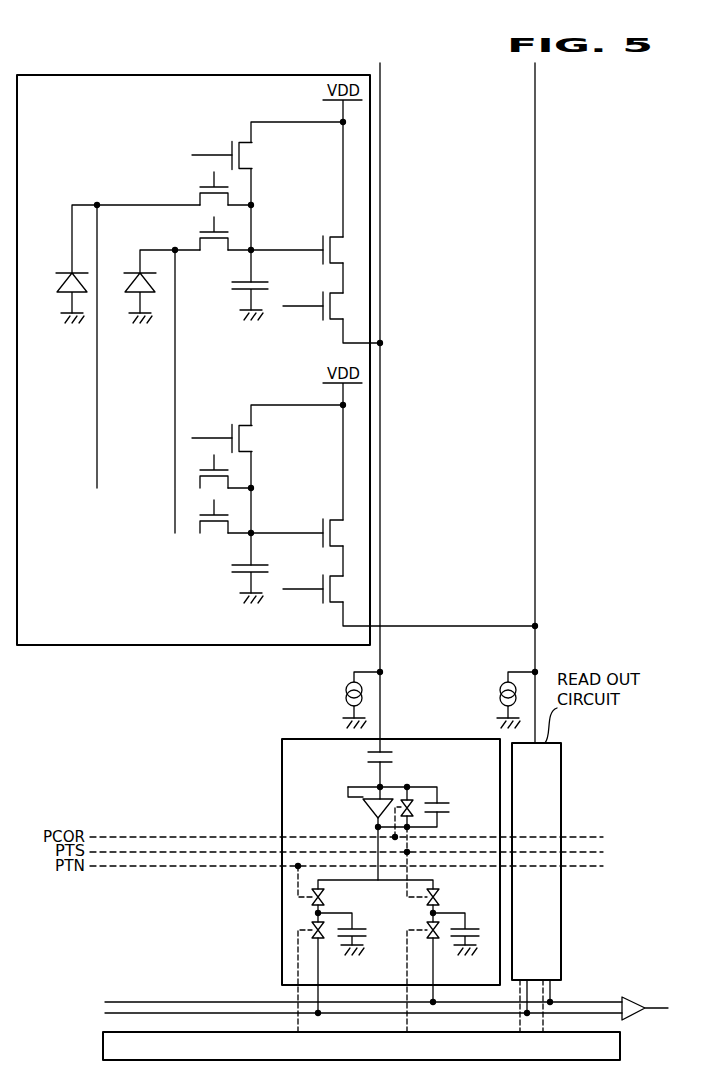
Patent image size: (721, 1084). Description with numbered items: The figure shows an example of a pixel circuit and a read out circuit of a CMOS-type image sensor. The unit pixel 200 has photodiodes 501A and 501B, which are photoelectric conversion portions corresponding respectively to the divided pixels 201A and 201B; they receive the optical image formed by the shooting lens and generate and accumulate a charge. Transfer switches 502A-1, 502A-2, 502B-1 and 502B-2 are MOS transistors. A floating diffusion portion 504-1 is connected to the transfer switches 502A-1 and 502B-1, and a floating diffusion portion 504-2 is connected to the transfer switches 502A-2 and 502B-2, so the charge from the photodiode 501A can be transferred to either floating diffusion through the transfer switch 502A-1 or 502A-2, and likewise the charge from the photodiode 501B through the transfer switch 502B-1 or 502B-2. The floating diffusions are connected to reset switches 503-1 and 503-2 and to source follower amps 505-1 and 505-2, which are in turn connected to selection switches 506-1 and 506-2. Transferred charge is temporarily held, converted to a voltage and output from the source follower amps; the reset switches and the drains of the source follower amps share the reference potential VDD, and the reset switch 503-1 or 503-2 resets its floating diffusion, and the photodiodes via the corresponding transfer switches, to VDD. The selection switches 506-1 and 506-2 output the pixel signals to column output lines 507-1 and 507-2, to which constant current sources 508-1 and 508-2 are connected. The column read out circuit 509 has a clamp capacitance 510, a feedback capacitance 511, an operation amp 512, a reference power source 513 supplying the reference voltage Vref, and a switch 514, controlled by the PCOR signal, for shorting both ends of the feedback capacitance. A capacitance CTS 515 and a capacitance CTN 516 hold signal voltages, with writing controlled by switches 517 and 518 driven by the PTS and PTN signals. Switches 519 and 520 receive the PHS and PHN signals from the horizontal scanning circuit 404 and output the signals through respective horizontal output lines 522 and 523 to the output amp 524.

The unit pixel 200 is at (80, 75).
The photodiode 501A is at (56, 319).
The photodiode 501B is at (129, 319).
The divided pixel 201A is at (66, 295).
The divided pixel 201B is at (134, 295).
The transfer switch 502A-1 is at (200, 186).
The transfer switch 502B-1 is at (200, 232).
The transfer switch 502A-2 is at (198, 470).
The transfer switch 502B-2 is at (198, 516).
The reset switch 503-1 is at (232, 146).
The reset switch 503-2 is at (233, 432).
The floating diffusion portion 504-1 is at (240, 282).
The floating diffusion portion 504-2 is at (240, 572).
The source follower amp 505-1 is at (323, 240).
The source follower amp 505-2 is at (323, 525).
The selection switch 506-1 is at (323, 316).
The selection switch 506-2 is at (323, 603).
The column output line 507-1 is at (380, 243).
The column output line 507-2 is at (535, 243).
The constant current source 508-1 is at (346, 690).
The constant current source 508-2 is at (500, 690).
The column read out circuit 509 is at (282, 757).
The clamp capacitance 510 is at (396, 757).
The feedback capacitance 511 is at (449, 804).
The operation amp 512 is at (375, 803).
The reference power source 513 is at (355, 799).
The switch 514 is at (440, 822).
The capacitance CTS 515 is at (468, 928).
The capacitance CTN 516 is at (360, 928).
The switch 517 is at (440, 897).
The switch 518 is at (326, 897).
The switch 519 is at (435, 940).
The switch 520 is at (322, 940).
The horizontal output line 522 is at (105, 1002).
The horizontal output line 523 is at (105, 1013).
The output amp 524 is at (620, 999).
The horizontal scanning circuit 404 is at (103, 1038).